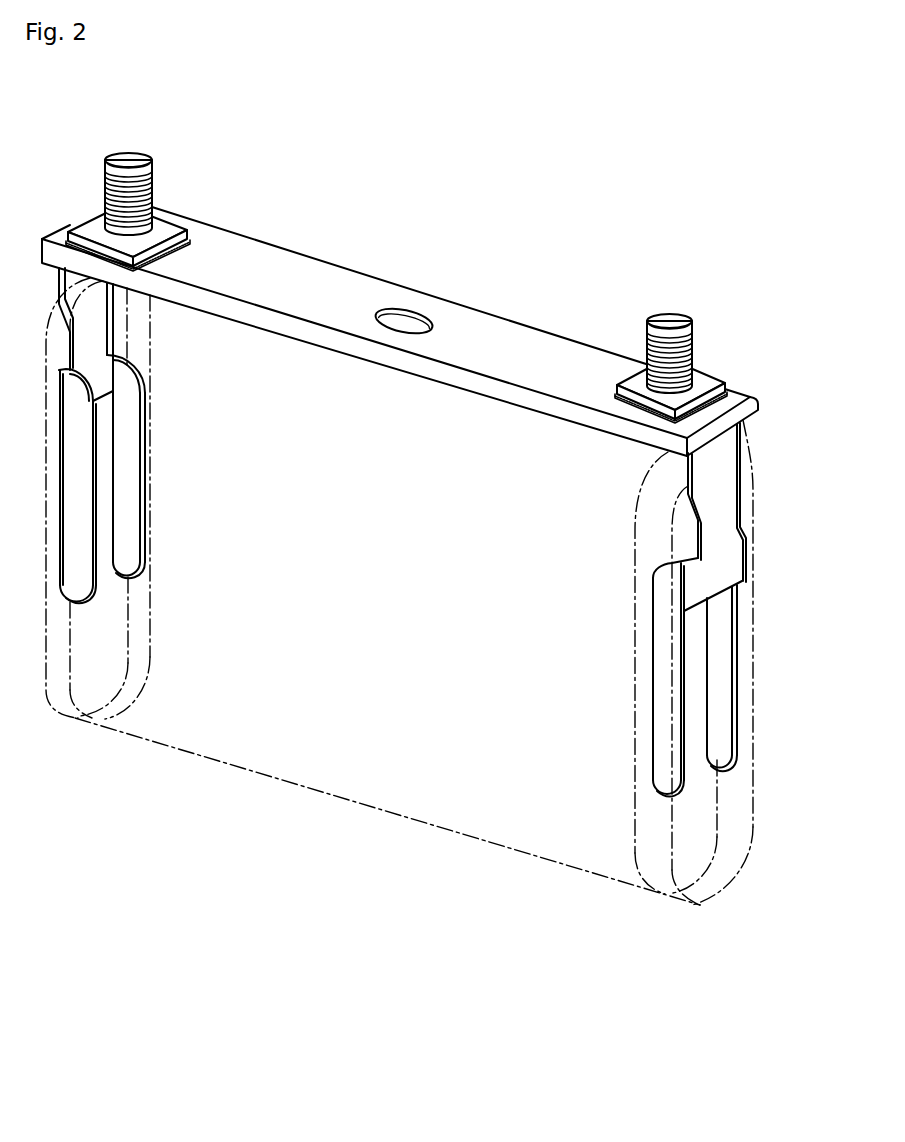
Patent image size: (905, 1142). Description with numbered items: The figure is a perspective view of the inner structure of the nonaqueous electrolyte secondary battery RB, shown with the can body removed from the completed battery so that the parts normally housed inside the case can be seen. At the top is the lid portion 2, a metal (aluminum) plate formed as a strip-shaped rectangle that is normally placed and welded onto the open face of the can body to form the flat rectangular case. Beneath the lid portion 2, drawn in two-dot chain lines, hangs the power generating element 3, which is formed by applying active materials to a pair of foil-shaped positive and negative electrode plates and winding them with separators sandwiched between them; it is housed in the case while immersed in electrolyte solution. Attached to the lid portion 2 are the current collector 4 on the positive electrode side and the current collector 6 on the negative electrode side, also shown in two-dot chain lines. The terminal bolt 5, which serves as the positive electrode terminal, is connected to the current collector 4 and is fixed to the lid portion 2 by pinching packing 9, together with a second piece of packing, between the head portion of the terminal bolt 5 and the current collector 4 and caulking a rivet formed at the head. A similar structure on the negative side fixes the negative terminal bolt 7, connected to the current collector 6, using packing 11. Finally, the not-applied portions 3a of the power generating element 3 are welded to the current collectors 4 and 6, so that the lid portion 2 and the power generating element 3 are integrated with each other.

The nonaqueous electrolyte secondary battery RB is at (440, 190).
The lid portion 2 is at (513, 333).
The power generating element 3 is at (297, 785).
The not-applied portions 3a is at (66, 688).
The current collector 4 is at (90, 598).
The terminal bolt 5 is at (129, 152).
The current collector 6 is at (652, 680).
The negative terminal bolt 7 is at (670, 313).
The packing 9 is at (168, 232).
The packing 11 is at (618, 402).